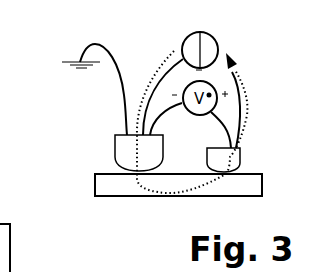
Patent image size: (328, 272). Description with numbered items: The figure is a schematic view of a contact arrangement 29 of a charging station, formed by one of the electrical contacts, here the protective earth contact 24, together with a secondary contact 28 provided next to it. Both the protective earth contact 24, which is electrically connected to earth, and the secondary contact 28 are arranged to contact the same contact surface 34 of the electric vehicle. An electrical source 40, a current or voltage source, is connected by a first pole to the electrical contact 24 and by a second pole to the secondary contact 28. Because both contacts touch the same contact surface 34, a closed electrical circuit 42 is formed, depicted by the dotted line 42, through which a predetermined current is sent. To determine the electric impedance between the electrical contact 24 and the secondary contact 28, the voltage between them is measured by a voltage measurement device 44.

The protective earth contact 24 is at (124, 146).
The secondary contact 28 is at (231, 157).
The contact arrangement 29 is at (89, 149).
The contact surface 34 is at (117, 186).
The electrical source 40 is at (190, 50).
The closed electrical circuit 42 is at (251, 103).
The voltage measurement device 44 is at (209, 95).